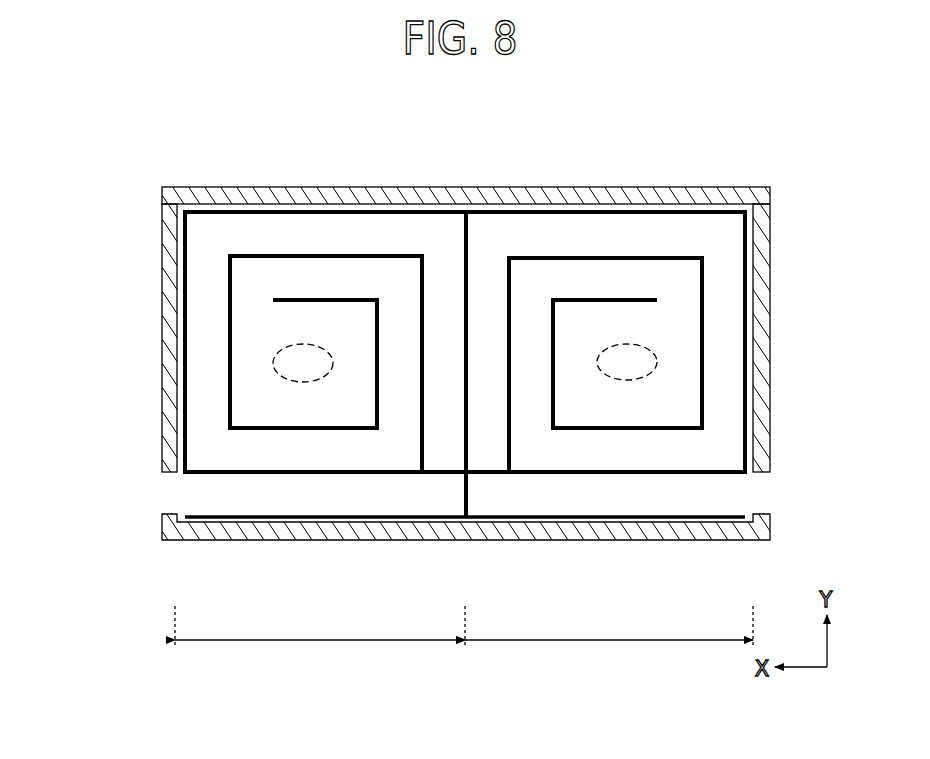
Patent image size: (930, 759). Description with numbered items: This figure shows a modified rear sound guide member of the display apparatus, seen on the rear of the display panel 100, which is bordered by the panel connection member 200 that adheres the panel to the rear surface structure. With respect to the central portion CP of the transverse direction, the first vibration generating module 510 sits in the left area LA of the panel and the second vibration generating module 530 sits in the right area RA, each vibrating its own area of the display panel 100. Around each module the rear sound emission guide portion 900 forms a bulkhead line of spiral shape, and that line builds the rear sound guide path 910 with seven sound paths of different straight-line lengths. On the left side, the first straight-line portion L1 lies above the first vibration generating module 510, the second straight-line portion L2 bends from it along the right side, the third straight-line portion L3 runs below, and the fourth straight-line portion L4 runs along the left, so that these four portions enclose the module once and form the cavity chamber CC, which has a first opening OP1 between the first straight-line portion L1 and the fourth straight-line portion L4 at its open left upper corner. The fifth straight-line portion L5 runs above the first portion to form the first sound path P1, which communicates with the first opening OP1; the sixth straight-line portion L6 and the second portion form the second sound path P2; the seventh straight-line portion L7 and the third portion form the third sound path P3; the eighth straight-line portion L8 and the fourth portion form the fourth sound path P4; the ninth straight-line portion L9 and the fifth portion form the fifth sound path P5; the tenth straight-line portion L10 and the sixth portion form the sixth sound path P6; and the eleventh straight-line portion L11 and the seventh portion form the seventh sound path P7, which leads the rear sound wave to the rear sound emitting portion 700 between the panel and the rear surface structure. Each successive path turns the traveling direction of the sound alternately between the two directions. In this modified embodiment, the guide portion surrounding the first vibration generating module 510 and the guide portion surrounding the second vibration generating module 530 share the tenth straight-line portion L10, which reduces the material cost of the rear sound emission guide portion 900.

The display panel 100 is at (175, 497).
The panel connection member 200 is at (174, 191).
The first vibration generating module 510 is at (300, 383).
The second vibration generating module 530 is at (625, 382).
The rear sound emitting portion 700 is at (177, 470).
The rear sound guide path 910 is at (588, 152).
The rear sound emission guide portion 900 is at (193, 131).
The first straight-line portion L1 is at (283, 298).
The second straight-line portion L2 is at (379, 310).
The third straight-line portion L3 is at (253, 425).
The fourth straight-line portion L4 is at (230, 378).
The fifth straight-line portion L5 is at (332, 256).
The sixth straight-line portion L6 is at (372, 412).
The seventh straight-line portion L7 is at (277, 472).
The eighth straight-line portion L8 is at (186, 240).
The ninth straight-line portion L9 is at (267, 212).
The tenth straight-line portion L10 is at (467, 238).
The eleventh straight-line portion L11 is at (317, 517).
The first opening OP1 is at (255, 302).
The first sound path P1 is at (317, 290).
The second sound path P2 is at (412, 363).
The third sound path P3 is at (317, 461).
The fourth sound path P4 is at (218, 350).
The fifth sound path P5 is at (317, 250).
The sixth sound path P6 is at (454, 363).
The seventh sound path P7 is at (317, 502).
The cavity chamber CC is at (290, 333).
The left area LA is at (320, 637).
The right area RA is at (609, 637).
The central portion CP is at (464, 640).